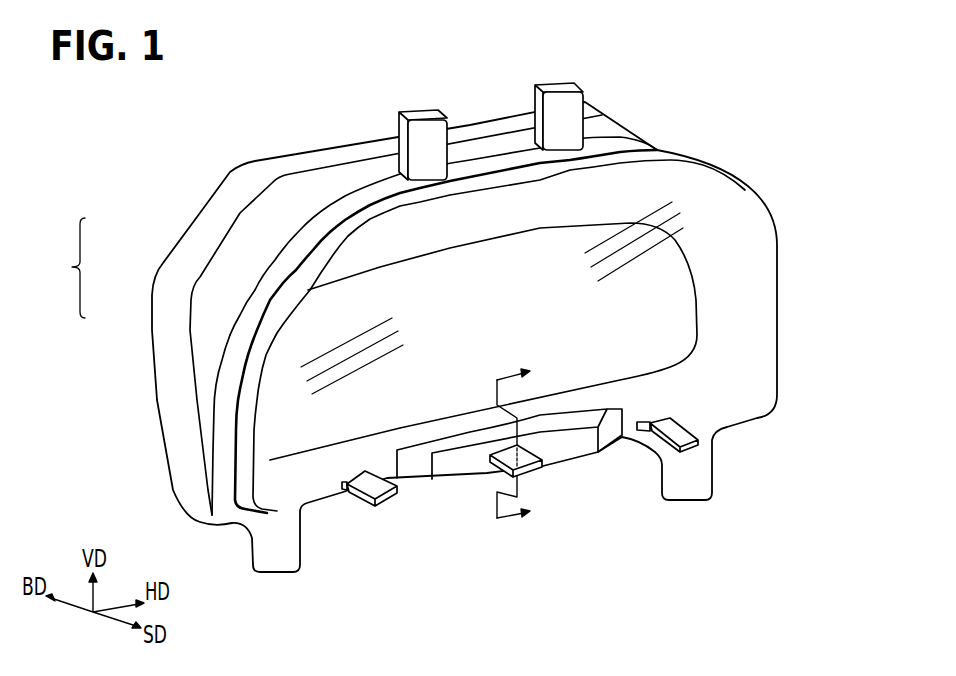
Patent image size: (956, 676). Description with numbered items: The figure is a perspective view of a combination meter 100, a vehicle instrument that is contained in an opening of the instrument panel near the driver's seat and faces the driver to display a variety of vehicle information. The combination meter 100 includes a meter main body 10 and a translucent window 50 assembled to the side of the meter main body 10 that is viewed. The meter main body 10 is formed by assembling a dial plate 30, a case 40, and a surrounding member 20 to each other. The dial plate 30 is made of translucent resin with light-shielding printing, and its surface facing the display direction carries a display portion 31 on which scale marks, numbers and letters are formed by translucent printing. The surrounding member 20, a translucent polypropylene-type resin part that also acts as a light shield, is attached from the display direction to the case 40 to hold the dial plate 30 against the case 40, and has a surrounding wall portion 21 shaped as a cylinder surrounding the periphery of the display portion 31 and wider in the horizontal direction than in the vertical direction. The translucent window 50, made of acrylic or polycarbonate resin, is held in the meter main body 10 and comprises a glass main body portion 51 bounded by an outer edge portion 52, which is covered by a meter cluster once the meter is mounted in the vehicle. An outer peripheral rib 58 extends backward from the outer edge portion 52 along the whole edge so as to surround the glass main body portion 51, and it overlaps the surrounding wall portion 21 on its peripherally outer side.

The combination meter 100 is at (808, 96).
The translucent window 50 is at (773, 225).
The meter main body 10 is at (72, 267).
The case 40 is at (203, 242).
The surrounding member 20 is at (255, 289).
The surrounding wall portion 21 is at (220, 413).
The dial plate 30 is at (330, 293).
The display portion 31 is at (652, 315).
The outer peripheral rib 58 is at (250, 365).
The glass main body portion 51 is at (433, 223).
The outer edge portion 52 is at (257, 452).